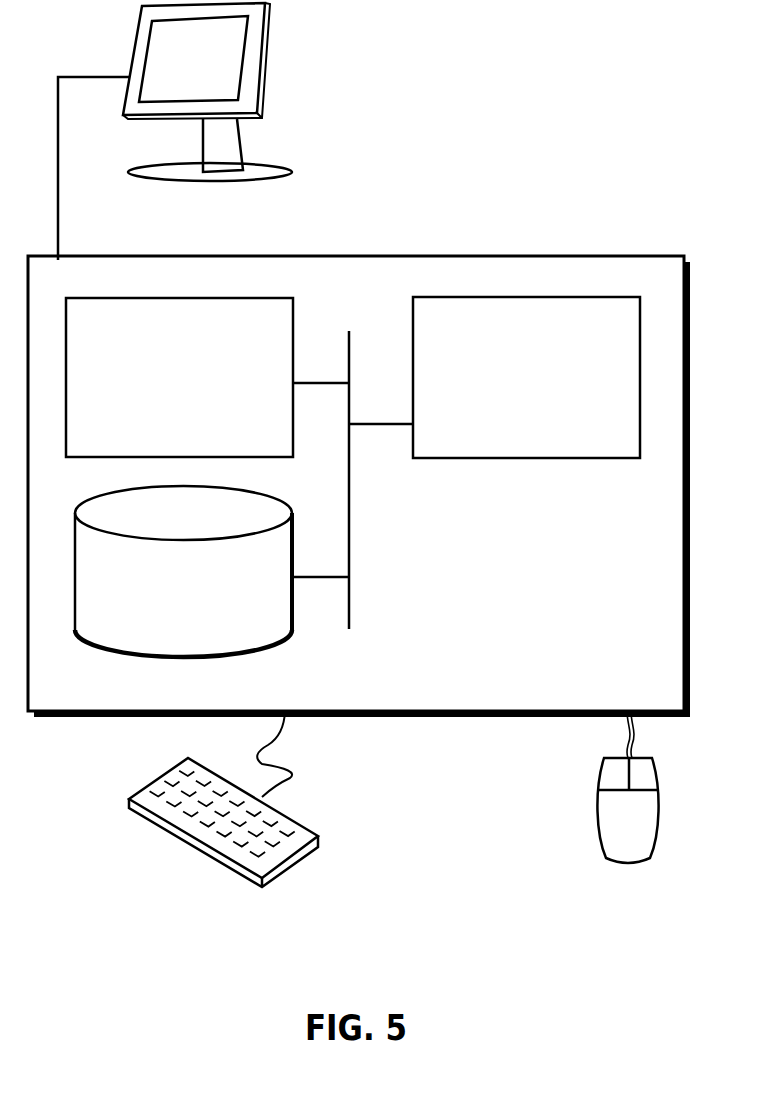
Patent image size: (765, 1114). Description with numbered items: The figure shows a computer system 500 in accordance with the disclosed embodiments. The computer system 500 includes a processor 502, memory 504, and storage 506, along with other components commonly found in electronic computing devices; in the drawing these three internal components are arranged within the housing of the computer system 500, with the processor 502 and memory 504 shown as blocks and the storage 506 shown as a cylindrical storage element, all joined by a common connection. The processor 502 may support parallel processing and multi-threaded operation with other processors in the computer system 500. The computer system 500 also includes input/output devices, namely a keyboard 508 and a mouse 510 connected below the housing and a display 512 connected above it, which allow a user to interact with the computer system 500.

The computer system 500 is at (403, 233).
The processor 502 is at (510, 391).
The memory 504 is at (160, 390).
The storage 506 is at (166, 602).
The keyboard 508 is at (151, 822).
The mouse 510 is at (606, 833).
The display 512 is at (175, 131).